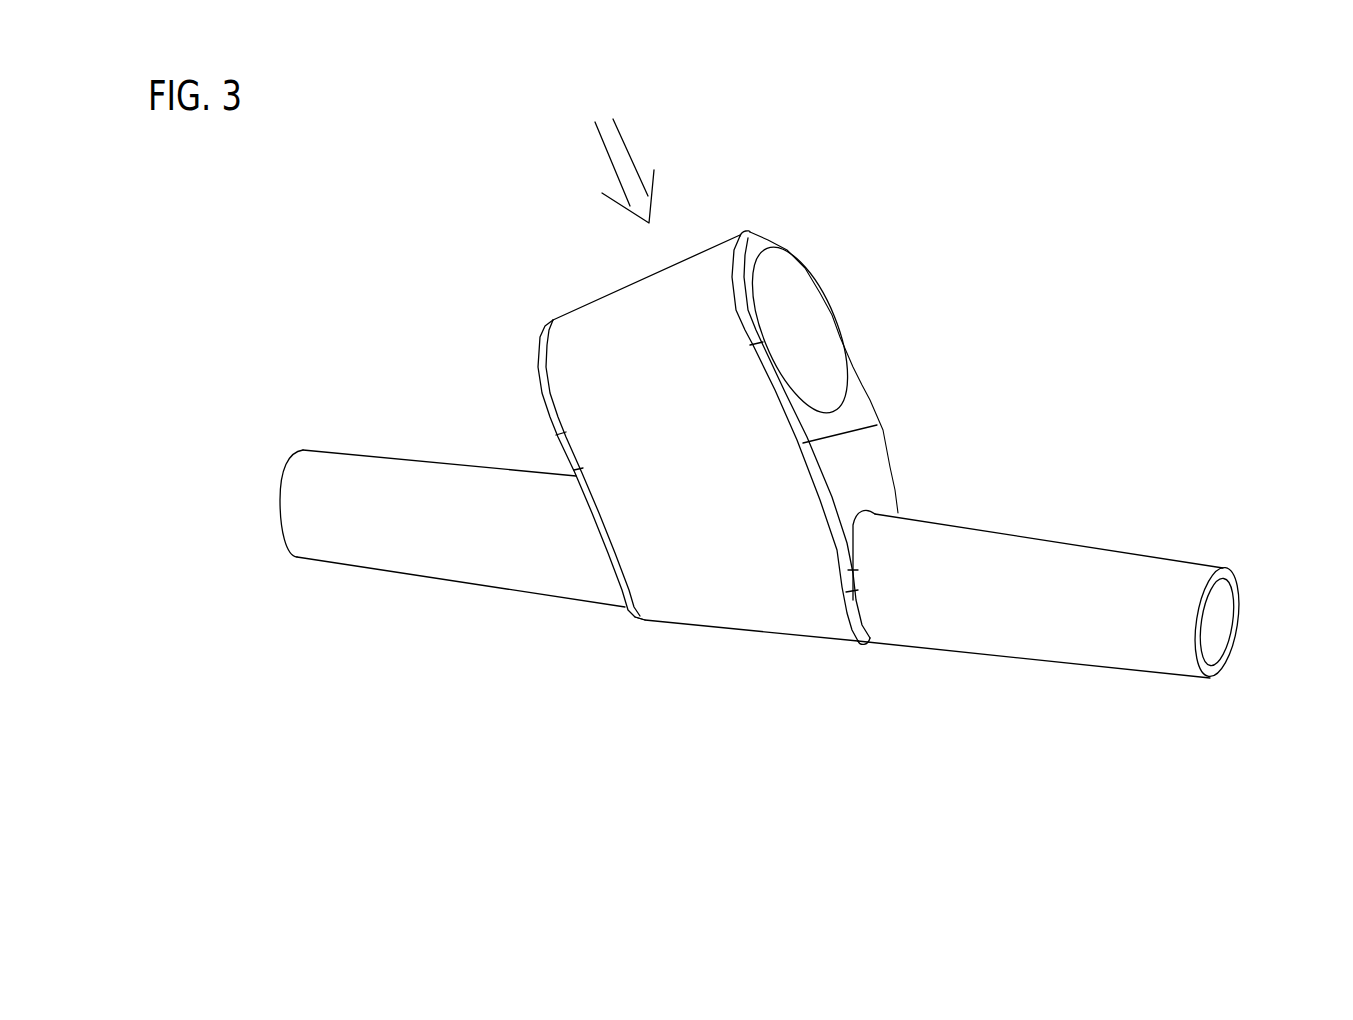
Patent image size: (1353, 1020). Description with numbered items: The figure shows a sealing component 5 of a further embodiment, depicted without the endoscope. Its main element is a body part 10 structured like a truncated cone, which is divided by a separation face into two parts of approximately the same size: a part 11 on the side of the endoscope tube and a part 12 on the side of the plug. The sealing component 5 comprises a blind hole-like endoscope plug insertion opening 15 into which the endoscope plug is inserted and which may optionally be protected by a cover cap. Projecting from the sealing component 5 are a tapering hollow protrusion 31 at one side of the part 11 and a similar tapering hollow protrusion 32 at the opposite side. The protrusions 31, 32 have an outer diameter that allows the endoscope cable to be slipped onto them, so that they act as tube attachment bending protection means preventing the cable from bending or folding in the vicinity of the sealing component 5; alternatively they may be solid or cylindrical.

The sealing component 5 is at (624, 157).
The body part 10 is at (705, 479).
The part on the side of the endoscope tube 11 is at (746, 673).
The part on the side of the plug 12 is at (613, 270).
The blind hole-like endoscope plug insertion opening 15 is at (828, 330).
The tapering hollow protrusion 31 is at (1046, 639).
The tapering hollow protrusion 32 is at (438, 556).